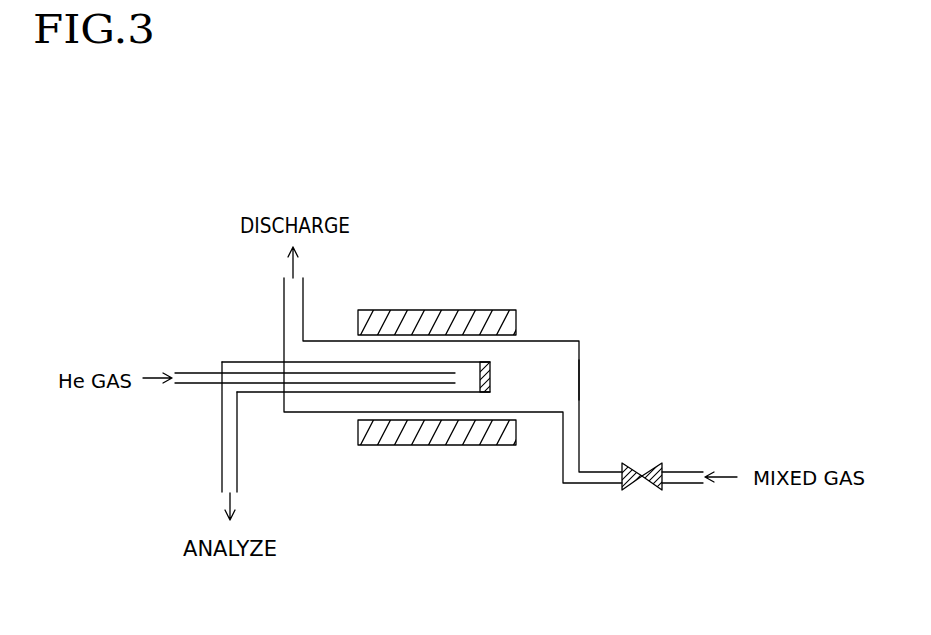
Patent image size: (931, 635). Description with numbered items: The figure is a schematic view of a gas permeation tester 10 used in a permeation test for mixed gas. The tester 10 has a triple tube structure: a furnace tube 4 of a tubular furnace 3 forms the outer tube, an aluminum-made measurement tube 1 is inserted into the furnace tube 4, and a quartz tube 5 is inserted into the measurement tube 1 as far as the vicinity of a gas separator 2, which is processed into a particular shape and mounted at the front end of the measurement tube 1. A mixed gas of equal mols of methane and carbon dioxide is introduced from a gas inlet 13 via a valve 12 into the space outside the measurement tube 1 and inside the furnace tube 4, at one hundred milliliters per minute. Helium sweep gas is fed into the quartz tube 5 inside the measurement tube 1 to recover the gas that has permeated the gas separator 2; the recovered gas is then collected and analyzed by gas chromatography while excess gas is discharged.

The measurement tube 1 is at (331, 360).
The gas separator 2 is at (490, 377).
The tubular furnace 3 is at (507, 320).
The furnace tube 4 is at (573, 383).
The quartz tube 5 is at (199, 378).
The gas permeation tester 10 is at (356, 528).
The valve 12 is at (632, 470).
The gas inlet 13 is at (683, 475).